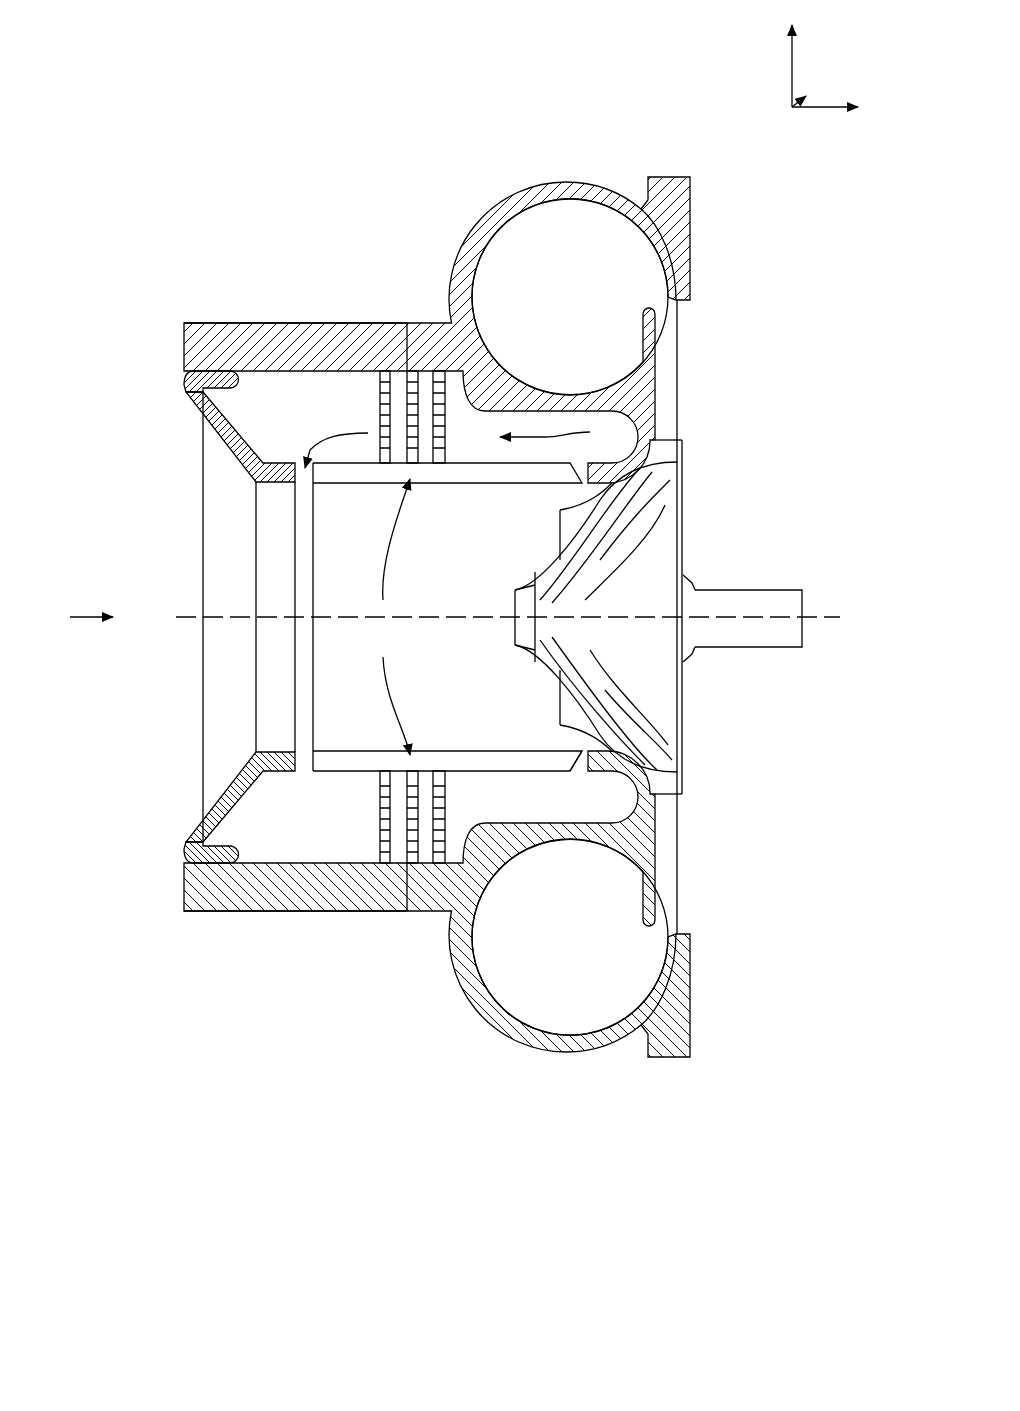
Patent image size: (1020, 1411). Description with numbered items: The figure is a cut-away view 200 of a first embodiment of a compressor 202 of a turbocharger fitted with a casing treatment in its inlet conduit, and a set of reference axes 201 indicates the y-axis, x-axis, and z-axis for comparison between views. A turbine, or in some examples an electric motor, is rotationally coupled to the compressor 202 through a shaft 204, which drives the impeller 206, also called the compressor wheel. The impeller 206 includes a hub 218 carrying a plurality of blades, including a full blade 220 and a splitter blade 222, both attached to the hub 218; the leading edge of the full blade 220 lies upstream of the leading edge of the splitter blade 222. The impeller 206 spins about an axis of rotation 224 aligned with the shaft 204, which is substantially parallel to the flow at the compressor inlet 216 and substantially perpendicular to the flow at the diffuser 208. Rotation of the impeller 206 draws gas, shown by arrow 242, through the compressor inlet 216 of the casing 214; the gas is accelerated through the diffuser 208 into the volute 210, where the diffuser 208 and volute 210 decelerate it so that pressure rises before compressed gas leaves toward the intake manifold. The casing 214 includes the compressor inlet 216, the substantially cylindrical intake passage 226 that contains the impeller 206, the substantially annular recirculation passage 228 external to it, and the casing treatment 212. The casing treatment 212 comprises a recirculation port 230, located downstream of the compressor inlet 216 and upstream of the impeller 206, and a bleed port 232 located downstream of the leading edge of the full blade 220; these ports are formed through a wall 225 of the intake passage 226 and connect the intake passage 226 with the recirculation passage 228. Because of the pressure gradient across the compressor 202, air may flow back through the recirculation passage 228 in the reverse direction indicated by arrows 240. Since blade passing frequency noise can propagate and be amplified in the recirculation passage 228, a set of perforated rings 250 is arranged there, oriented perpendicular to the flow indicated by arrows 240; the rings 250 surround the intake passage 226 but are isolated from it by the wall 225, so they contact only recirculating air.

The cut-away view 200 is at (152, 155).
The reference axes 201 is at (843, 33).
The compressor 202 is at (268, 245).
The shaft 204 is at (770, 590).
The impeller 206 is at (500, 607).
The diffuser 208 is at (668, 388).
The volute 210 is at (495, 240).
The casing treatment 212 is at (476, 462).
The casing 214 is at (212, 323).
The compressor inlet 216 is at (163, 592).
The hub 218 is at (518, 578).
The full blade 220 is at (545, 532).
The splitter blade 222 is at (583, 703).
The axis of rotation 224 is at (186, 622).
The wall 225 is at (483, 770).
The intake passage 226 is at (355, 590).
The recirculation passage 228 is at (335, 383).
The recirculation port 230 is at (302, 774).
The bleed port 232 is at (582, 777).
The arrows 240 is at (340, 434).
The arrow 242 is at (73, 618).
The set of perforated rings 250 is at (391, 617).